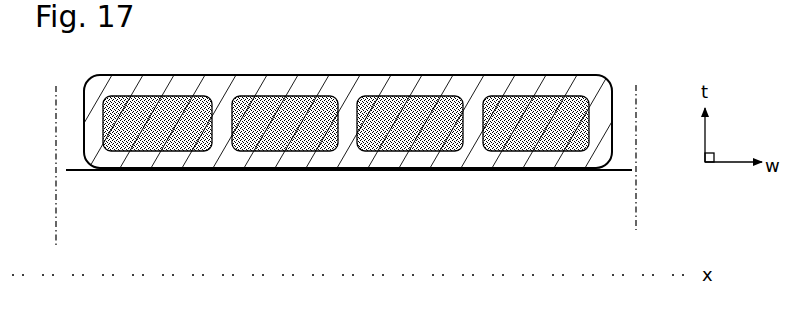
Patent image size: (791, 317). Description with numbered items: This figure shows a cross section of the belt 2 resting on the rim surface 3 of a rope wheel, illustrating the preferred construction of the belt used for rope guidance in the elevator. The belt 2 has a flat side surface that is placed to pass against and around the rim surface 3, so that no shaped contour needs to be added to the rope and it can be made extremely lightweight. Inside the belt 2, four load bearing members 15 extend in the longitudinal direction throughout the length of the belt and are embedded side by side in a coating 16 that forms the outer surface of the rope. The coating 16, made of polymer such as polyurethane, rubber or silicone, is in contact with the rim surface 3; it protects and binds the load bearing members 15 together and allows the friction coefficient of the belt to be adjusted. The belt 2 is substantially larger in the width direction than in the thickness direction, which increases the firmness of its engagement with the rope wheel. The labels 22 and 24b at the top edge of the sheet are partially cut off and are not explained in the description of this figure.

The belt 2 is at (553, 45).
The rim surface 3 is at (620, 166).
The load bearing members 15 is at (346, 123).
The coating 16 is at (100, 91).
The connection layer 22 is at (383, 4).
The contact structure 24b is at (272, 0).